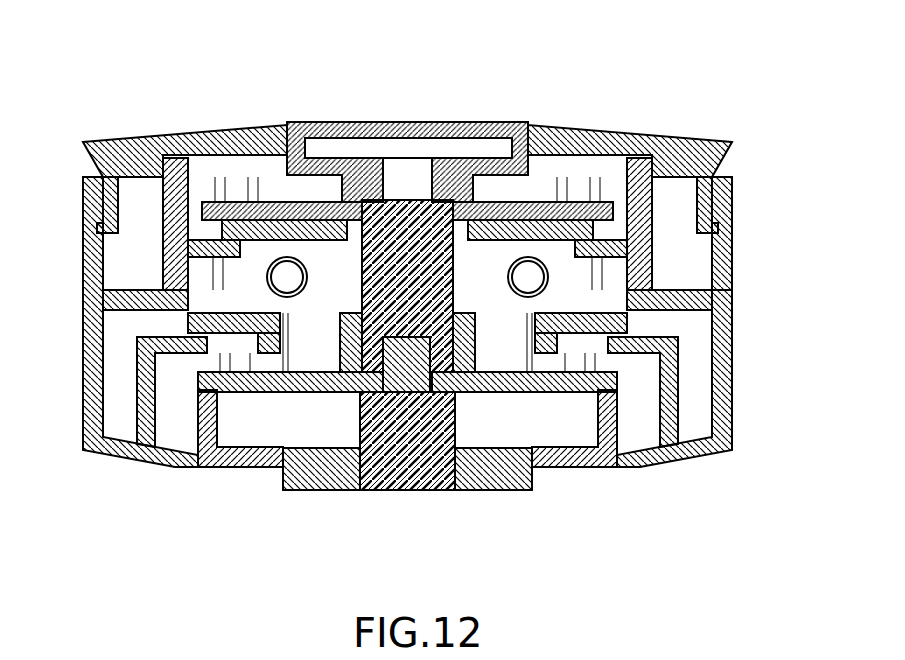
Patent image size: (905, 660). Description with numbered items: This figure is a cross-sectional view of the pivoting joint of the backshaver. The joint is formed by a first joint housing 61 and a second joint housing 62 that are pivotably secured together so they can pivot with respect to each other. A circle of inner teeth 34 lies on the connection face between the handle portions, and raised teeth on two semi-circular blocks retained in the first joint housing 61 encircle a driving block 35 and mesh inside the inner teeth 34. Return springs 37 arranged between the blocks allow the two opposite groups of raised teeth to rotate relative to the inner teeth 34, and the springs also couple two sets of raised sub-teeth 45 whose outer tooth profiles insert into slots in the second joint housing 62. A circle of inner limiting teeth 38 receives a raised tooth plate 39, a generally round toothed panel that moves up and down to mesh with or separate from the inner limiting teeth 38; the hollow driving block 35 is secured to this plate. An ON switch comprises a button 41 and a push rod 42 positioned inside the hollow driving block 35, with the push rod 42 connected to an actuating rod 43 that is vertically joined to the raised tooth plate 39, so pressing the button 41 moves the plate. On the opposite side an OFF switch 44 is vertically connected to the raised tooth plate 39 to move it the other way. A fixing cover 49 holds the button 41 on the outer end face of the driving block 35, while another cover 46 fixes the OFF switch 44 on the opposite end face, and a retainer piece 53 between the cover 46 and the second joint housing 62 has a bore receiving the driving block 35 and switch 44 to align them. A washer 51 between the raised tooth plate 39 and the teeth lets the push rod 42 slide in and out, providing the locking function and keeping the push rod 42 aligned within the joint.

The inner teeth 34 is at (110, 322).
The driving block 35 is at (705, 224).
The return springs 37 is at (409, 301).
The inner limiting teeth 38 is at (185, 115).
The raised tooth plate 39 is at (416, 197).
The button 41 is at (407, 113).
The push rod 42 is at (404, 445).
The actuating rod 43 is at (366, 345).
The OFF switch 44 is at (426, 501).
The raised sub-teeth 45 is at (282, 147).
The cover 46 is at (212, 471).
The fixing cover 49 is at (630, 119).
The washer 51 is at (533, 150).
The retainer piece 53 is at (574, 452).
The first joint housing 61 is at (757, 233).
The second joint housing 62 is at (705, 378).